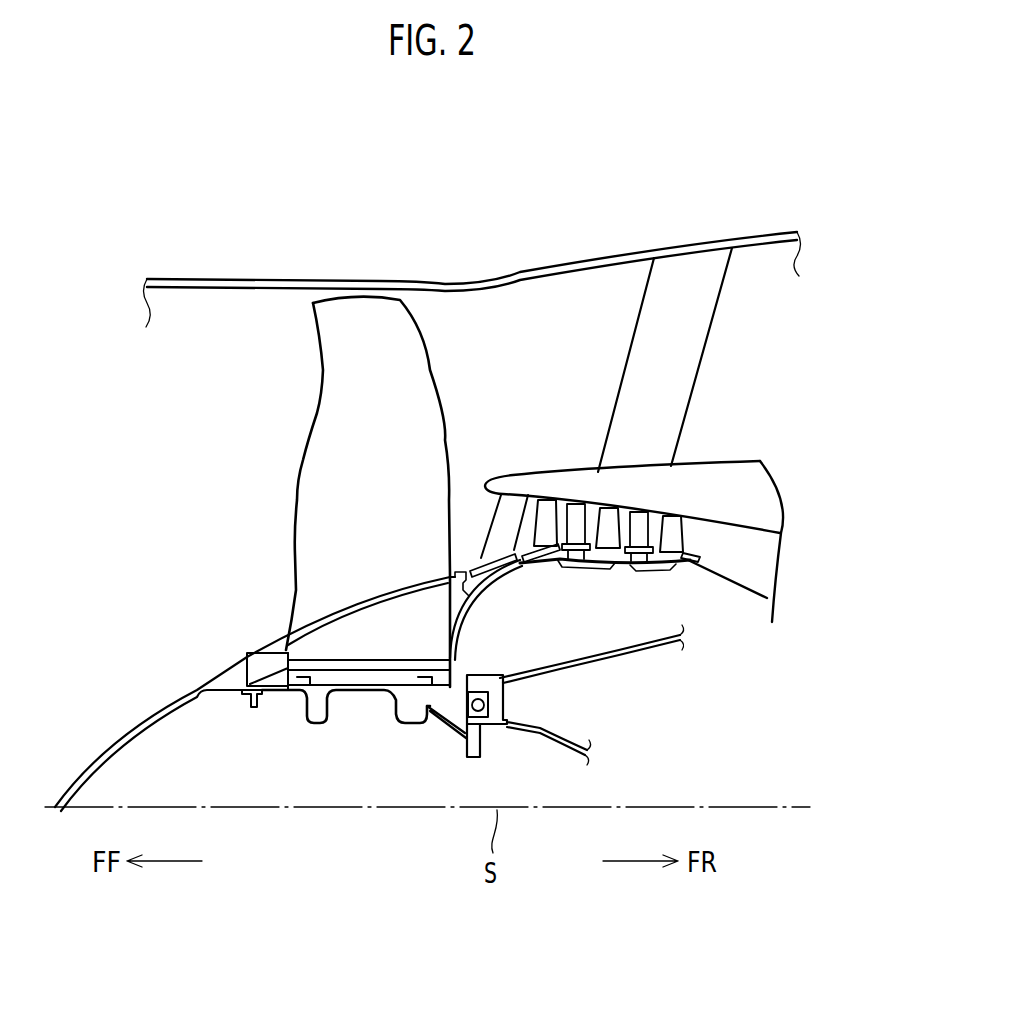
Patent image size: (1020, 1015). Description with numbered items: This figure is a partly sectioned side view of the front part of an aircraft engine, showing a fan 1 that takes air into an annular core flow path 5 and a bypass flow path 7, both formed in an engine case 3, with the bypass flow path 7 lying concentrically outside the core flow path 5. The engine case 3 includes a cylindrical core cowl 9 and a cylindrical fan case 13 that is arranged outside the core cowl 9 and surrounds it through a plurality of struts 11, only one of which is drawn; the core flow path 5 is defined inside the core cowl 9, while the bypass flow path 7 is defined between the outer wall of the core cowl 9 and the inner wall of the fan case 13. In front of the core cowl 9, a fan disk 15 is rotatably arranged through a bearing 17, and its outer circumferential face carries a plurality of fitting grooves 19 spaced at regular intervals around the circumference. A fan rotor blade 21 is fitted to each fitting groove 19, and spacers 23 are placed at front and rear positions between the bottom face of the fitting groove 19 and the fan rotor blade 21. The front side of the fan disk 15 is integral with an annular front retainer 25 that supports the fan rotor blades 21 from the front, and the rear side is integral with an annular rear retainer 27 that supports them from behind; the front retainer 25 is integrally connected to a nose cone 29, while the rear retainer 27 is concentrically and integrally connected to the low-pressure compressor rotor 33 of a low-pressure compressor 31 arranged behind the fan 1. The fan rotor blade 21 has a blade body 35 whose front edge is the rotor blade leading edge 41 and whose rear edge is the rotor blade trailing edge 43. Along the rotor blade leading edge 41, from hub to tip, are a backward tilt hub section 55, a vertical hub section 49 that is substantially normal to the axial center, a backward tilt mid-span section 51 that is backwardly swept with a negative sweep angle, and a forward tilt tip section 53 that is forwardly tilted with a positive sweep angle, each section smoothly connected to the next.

The fan 1 is at (210, 502).
The engine case 3 is at (626, 252).
The core flow path 5 is at (740, 580).
The bypass flow path 7 is at (760, 280).
The core cowl 9 is at (738, 465).
The strut 11 is at (627, 332).
The fan case 13 is at (506, 279).
The fan disk 15 is at (320, 727).
The bearing 17 is at (495, 705).
The fitting groove 19 is at (363, 700).
The fan rotor blade 21 is at (434, 373).
The spacer 23 is at (296, 690).
The front retainer 25 is at (258, 672).
The rear retainer 27 is at (450, 660).
The nose cone 29 is at (130, 727).
The low-pressure compressor 31 is at (642, 497).
The low-pressure compressor rotor 33 is at (545, 575).
The blade body 35 is at (451, 447).
The rotor blade leading edge 41 is at (303, 462).
The rotor blade trailing edge 43 is at (385, 688).
The vertical hub section 49 is at (295, 557).
The backward tilt mid-span section 51 is at (317, 413).
The forward tilt tip section 53 is at (314, 330).
The backward tilt hub section 55 is at (291, 602).